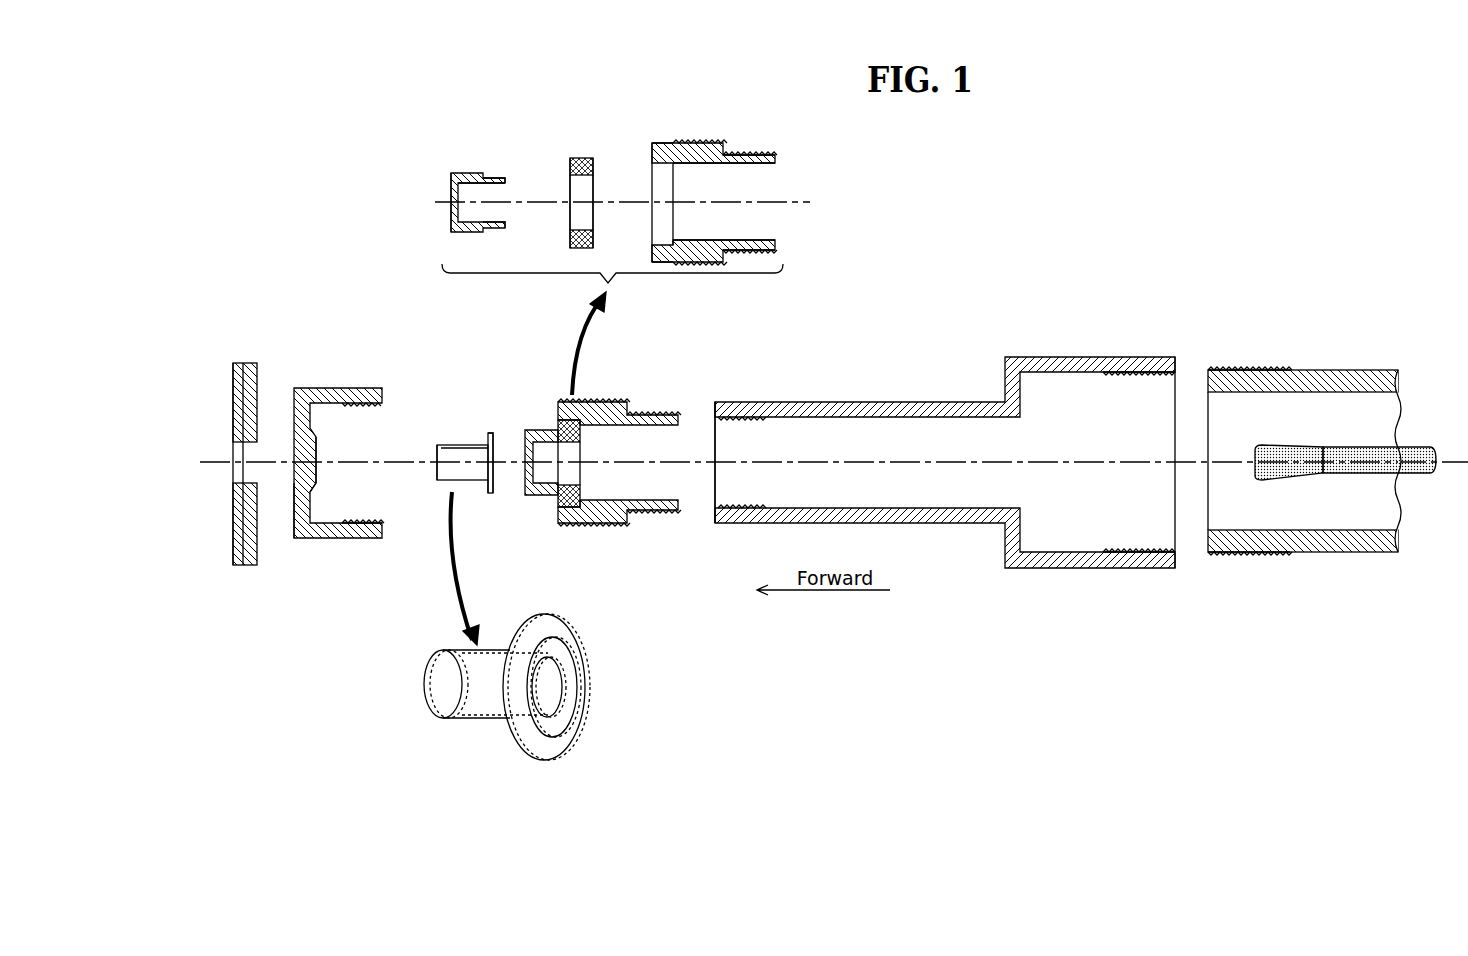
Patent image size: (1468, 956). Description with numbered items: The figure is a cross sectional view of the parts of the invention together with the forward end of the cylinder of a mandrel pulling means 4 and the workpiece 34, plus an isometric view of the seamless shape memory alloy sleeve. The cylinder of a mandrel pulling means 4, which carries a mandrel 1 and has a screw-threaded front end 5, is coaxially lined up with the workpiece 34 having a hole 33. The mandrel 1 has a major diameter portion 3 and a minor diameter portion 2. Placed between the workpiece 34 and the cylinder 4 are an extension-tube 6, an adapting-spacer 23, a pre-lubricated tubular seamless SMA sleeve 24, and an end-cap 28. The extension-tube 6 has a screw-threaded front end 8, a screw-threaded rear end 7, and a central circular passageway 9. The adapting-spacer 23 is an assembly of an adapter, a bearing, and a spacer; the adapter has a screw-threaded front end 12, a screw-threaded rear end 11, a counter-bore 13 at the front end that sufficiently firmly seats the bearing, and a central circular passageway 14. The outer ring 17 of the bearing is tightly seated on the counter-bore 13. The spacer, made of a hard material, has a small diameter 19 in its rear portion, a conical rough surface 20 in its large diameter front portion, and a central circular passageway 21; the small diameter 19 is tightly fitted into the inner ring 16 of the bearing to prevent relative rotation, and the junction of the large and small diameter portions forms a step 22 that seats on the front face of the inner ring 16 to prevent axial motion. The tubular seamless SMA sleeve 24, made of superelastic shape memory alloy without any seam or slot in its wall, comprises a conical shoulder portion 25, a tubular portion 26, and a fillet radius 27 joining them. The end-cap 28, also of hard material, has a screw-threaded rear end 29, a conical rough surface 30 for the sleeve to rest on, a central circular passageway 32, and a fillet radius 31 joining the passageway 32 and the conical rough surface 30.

The mandrel 1 is at (1345, 403).
The minor diameter portion 2 is at (1348, 447).
The major diameter portion 3 is at (1272, 447).
The cylinder of a mandrel pulling means 4 is at (1338, 540).
The screw-threaded front end 5 is at (1260, 552).
The extension-tube 6 is at (952, 434).
The screw-threaded rear end 7 is at (1172, 372).
The screw-threaded front end 8 is at (716, 420).
The central circular passageway 9 is at (835, 417).
The screw-threaded rear end 11 is at (740, 155).
The screw-threaded front end 12 is at (662, 145).
The counter-bore 13 is at (660, 168).
The central circular passageway 14 is at (752, 175).
The inner ring 16 is at (571, 172).
The outer ring 17 is at (593, 160).
The small diameter 19 is at (497, 178).
The conical rough surface 20 is at (455, 186).
The central circular passageway 21 is at (500, 217).
The step 22 is at (487, 178).
The adapting-spacer 23 is at (602, 457).
The tubular seamless SMA sleeve 24 is at (468, 445).
The conical shoulder portion 25 is at (491, 435).
The tubular portion 26 is at (440, 447).
The fillet radius 27 is at (490, 490).
The end-cap 28 is at (352, 388).
The screw-threaded rear end 29 is at (382, 520).
The conical rough surface 30 is at (320, 490).
The fillet radius 31 is at (336, 490).
The central circular passageway 32 is at (300, 486).
The hole 33 is at (235, 453).
The workpiece 34 is at (252, 378).